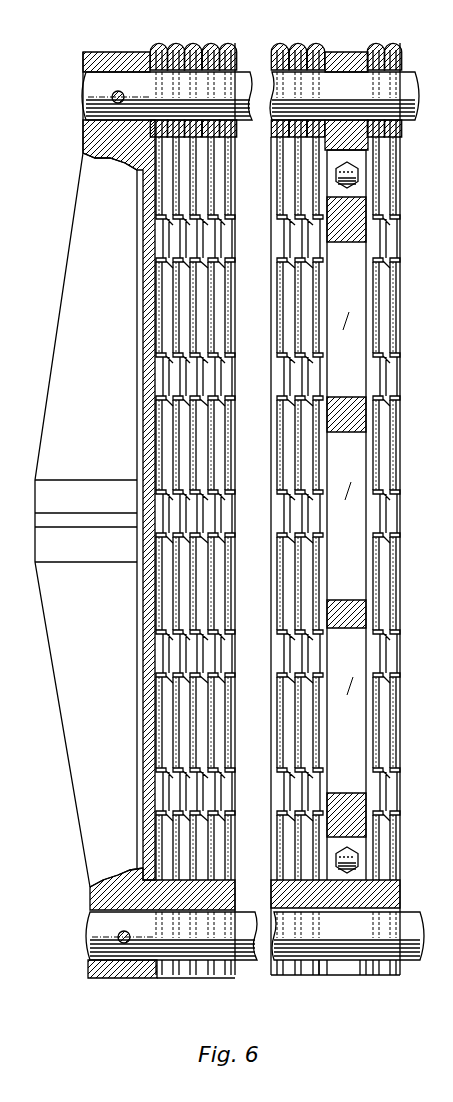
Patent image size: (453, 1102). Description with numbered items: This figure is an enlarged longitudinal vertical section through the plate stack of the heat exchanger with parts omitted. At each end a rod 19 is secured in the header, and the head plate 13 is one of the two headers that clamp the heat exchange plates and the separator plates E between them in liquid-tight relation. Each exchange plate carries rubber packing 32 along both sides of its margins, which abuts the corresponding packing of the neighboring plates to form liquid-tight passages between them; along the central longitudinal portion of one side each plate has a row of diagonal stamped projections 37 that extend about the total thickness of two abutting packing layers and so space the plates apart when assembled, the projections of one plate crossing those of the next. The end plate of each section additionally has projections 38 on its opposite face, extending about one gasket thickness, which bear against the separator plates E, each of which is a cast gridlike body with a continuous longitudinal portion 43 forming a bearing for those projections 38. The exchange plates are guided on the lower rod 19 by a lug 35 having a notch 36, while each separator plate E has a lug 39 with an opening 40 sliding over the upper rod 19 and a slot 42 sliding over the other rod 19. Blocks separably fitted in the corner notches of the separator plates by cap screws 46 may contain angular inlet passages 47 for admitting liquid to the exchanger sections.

The head plate 13 is at (62, 353).
The rod 19 is at (80, 119).
The rubber packing 32 is at (292, 177).
The lug 35 is at (322, 975).
The notch 36 is at (193, 976).
The projections 37 is at (265, 225).
The projections 38 is at (158, 236).
The lug 39 is at (334, 52).
The opening 40 is at (370, 60).
The slot 42 is at (362, 968).
The continuous longitudinal portion 43 is at (347, 262).
The cap screws 46 is at (360, 176).
The angular inlet passages 47 is at (400, 192).
The separator plates E is at (358, 60).